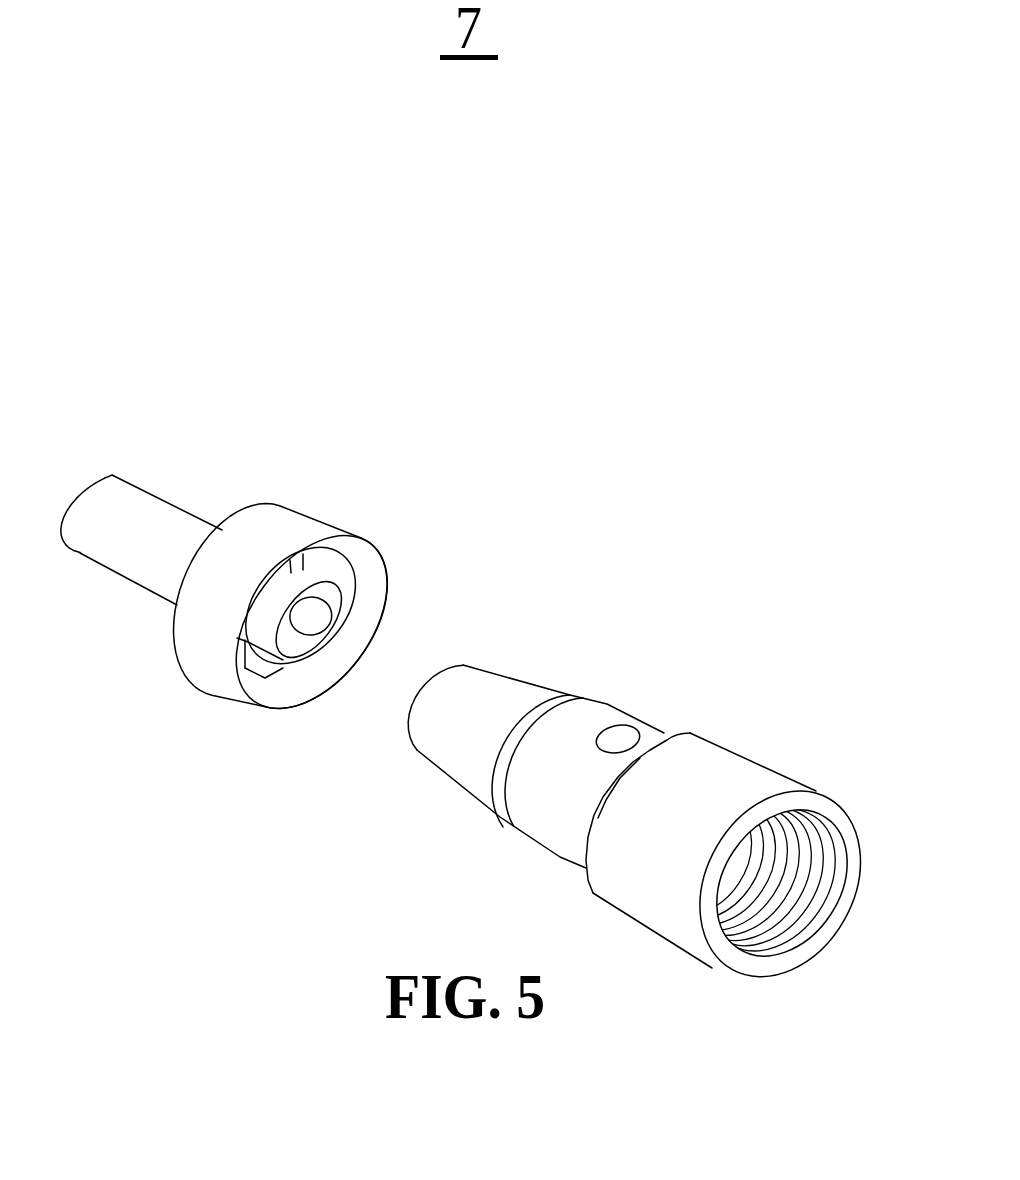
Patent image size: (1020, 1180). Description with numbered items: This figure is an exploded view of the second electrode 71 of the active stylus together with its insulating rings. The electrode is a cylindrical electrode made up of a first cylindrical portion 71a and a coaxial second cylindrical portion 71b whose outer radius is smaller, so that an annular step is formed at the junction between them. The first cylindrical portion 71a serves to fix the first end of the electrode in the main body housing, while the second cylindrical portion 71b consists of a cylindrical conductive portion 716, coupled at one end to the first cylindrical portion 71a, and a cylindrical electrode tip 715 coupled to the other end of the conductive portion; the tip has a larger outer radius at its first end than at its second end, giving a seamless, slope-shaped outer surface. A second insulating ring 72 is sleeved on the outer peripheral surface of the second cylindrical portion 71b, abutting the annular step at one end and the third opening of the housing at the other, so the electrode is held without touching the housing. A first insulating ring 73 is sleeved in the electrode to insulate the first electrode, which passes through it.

The connector body 71 is at (650, 642).
The first cylindrical portion 71a is at (739, 691).
The second cylindrical portion 71b is at (570, 623).
The cylindrical electrode tip 715 is at (556, 652).
The cylindrical conductive portion 716 is at (607, 718).
The second insulating ring 72 is at (213, 610).
The first insulating ring 73 is at (117, 558).